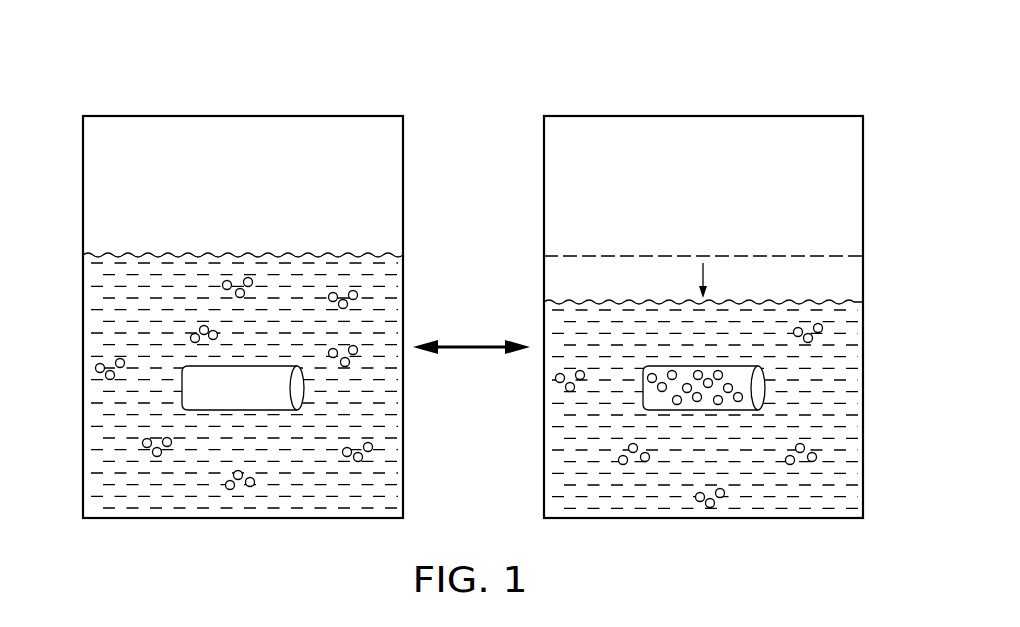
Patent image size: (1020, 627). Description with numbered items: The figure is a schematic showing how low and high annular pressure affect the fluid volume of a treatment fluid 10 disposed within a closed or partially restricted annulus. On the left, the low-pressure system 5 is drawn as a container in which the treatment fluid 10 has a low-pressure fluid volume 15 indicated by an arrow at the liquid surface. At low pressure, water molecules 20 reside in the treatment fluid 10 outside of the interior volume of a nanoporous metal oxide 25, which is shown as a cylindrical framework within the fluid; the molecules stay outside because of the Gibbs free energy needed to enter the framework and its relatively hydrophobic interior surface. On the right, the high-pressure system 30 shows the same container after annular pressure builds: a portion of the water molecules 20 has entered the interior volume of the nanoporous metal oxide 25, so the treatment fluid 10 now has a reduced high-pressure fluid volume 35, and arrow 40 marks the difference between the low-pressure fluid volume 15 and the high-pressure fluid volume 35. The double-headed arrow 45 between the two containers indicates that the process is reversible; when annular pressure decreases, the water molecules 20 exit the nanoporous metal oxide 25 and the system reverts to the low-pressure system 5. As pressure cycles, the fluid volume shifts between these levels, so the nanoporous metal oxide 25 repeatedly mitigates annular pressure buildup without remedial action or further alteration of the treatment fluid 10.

The low-pressure system 5 is at (184, 100).
The treatment fluid 10 is at (92, 322).
The low-pressure fluid volume 15 is at (118, 253).
The water molecules 20 is at (96, 366).
The nanoporous metal oxide 25 is at (168, 394).
The high-pressure system 30 is at (759, 99).
The high-pressure fluid volume 35 is at (842, 284).
The arrow indicating fluid volume difference 40 is at (704, 274).
The arrow indicating reversibility 45 is at (470, 344).